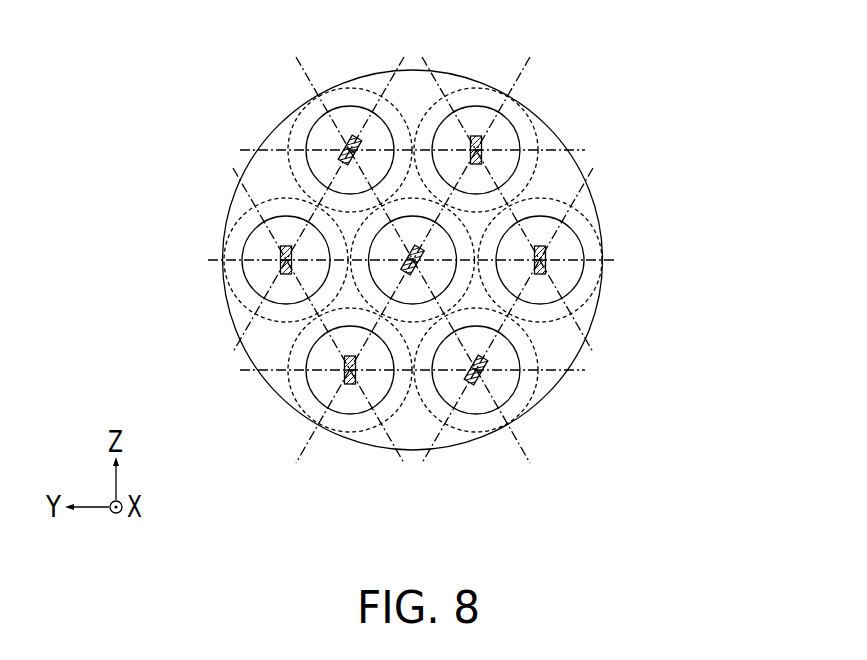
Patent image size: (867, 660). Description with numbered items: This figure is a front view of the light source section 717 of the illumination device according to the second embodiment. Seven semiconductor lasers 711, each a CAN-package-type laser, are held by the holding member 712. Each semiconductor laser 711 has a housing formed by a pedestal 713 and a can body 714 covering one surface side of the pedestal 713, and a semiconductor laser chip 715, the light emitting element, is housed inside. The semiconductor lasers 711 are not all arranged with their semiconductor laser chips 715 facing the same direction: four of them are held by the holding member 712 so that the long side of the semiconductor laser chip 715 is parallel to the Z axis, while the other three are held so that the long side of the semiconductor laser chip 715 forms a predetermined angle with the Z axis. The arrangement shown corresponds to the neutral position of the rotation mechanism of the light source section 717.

The semiconductor laser 711 is at (778, 233).
The holding member 712 is at (380, 440).
The pedestal 713 is at (578, 300).
The can body 714 is at (545, 224).
The semiconductor laser chip 715 is at (546, 266).
The light source section 717 is at (350, 43).